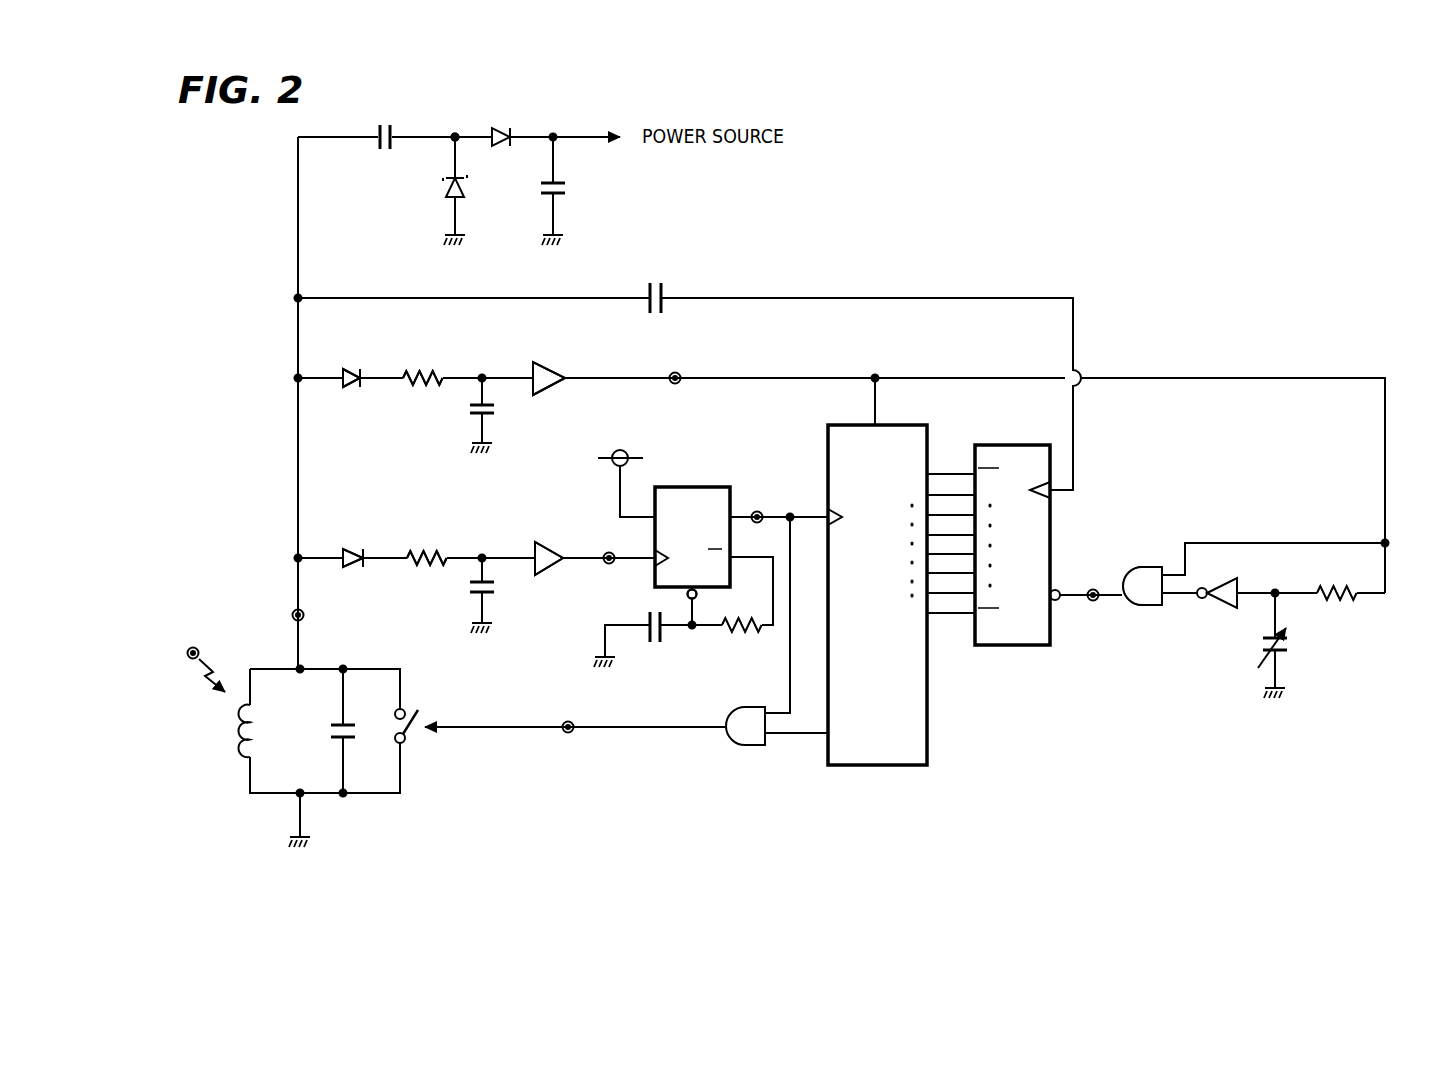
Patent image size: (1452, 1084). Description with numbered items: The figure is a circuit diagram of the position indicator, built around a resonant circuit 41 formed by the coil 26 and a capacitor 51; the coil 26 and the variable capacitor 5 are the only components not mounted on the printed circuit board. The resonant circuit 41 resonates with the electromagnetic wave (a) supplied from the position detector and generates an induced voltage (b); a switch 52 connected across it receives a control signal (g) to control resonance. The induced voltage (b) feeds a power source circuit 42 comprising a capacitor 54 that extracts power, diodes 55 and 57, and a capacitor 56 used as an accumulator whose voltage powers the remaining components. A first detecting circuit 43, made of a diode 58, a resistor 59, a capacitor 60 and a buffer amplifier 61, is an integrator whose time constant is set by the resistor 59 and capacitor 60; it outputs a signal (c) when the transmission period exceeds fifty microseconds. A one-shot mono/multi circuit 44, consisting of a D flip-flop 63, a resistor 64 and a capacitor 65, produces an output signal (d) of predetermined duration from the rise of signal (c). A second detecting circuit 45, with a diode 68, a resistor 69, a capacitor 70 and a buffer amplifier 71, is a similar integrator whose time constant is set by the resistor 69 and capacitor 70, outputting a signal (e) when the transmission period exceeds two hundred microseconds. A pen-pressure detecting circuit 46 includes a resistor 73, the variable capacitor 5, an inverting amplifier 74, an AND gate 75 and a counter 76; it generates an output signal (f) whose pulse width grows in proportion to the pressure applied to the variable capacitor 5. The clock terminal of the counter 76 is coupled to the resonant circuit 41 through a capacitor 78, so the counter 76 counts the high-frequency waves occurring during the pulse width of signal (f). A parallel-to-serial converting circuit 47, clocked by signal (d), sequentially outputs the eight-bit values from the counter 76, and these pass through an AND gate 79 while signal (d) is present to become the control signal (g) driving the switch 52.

The power source circuit 42 is at (455, 124).
The diode 55 is at (504, 124).
The capacitor 54 is at (385, 162).
The diode 57 is at (445, 201).
The capacitor 56 is at (575, 188).
The capacitor 78 is at (655, 279).
The diode 68 is at (350, 367).
The resistor 69 is at (426, 367).
The buffer amplifier 71 is at (544, 362).
The capacitor 70 is at (500, 410).
The second detecting circuit 45 is at (419, 399).
The D flip-flop 63 is at (697, 485).
The diode 58 is at (348, 547).
The resistor 59 is at (424, 547).
The buffer amplifier 61 is at (545, 543).
The capacitor 60 is at (500, 590).
The first detecting circuit 43 is at (417, 581).
The capacitor 65 is at (655, 648).
The resistor 64 is at (740, 638).
The one-shot mono/multi circuit 44 is at (699, 658).
The coil 26 is at (240, 732).
The capacitor 51 is at (328, 729).
The switch 52 is at (409, 703).
The resonant circuit 41 is at (281, 768).
The AND gate 79 is at (745, 748).
The parallel-to-serial converting circuit 47 is at (873, 768).
The counter 76 is at (1012, 648).
The AND gate 75 is at (1148, 609).
The pen-pressure detecting circuit 46 is at (1178, 655).
The inverting amplifier 74 is at (1222, 611).
The resistor 73 is at (1337, 612).
The variable capacitor 5 is at (1290, 661).
The electromagnetic wave a is at (193, 645).
The induced voltage b is at (291, 615).
The output signal of first detecting circuit c is at (609, 566).
The output signal of one-shot mono/multi circuit d is at (757, 509).
The output signal of second detecting circuit e is at (675, 370).
The output signal of pen-pressure detecting circuit f is at (1094, 603).
The control signal g is at (570, 740).